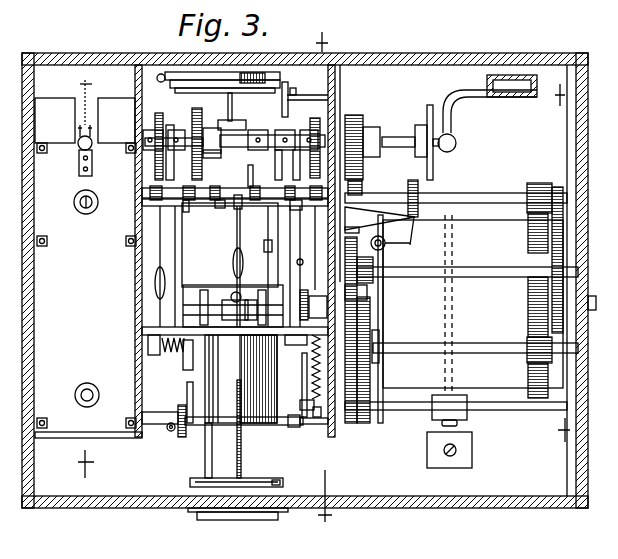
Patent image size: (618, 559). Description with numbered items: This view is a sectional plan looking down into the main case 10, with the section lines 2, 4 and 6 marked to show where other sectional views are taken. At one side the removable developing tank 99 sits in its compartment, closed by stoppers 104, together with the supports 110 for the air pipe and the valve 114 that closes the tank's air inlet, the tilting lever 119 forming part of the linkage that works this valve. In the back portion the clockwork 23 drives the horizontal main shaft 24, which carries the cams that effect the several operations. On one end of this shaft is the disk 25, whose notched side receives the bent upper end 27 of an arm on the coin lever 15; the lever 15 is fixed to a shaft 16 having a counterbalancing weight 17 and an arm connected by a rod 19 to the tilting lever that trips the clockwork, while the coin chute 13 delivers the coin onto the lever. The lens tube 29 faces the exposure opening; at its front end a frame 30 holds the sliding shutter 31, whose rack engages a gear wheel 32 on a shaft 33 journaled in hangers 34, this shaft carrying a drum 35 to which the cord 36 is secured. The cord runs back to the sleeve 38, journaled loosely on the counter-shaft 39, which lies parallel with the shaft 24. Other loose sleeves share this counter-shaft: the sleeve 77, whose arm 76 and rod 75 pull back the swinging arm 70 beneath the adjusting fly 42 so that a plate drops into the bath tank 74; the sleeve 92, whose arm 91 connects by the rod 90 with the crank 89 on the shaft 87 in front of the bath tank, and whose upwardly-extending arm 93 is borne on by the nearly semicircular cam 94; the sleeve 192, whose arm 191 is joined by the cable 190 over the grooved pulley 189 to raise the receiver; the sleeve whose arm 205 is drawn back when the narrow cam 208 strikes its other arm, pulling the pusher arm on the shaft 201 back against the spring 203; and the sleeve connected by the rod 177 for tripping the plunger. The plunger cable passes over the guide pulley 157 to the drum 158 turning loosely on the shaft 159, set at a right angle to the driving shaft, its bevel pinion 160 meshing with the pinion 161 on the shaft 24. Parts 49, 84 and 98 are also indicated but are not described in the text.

The main case 10 is at (512, 509).
The section line 2— 2 is at (327, 280).
The section line 4— 4 is at (559, 271).
The section line 6 is at (81, 275).
The coin chute 13 is at (515, 75).
The lever 15 is at (453, 118).
The shaft 16 is at (510, 410).
The counterbalancing weight 17 is at (470, 457).
The rod 19 is at (314, 124).
The clock-work 23 is at (473, 320).
The main shaft 24 is at (232, 147).
The disk 25 is at (433, 120).
The bent upper end 27 is at (456, 150).
The lens tube 29 is at (241, 379).
The frame 30 is at (278, 481).
The shutter 31 is at (190, 484).
The gear wheel 32 is at (235, 448).
The shaft 33 is at (212, 432).
The hangers 34 is at (195, 410).
The drum 35 is at (180, 435).
The cord or cable 36 is at (188, 263).
The sleeve 38 is at (188, 208).
The counter-shaft 39 is at (253, 167).
The adjusting fly 42 is at (248, 290).
The block 49 is at (211, 128).
The swinging arm 70 is at (230, 292).
The developing bath tank 74 is at (255, 300).
The rod 75 is at (250, 240).
The arm 76 is at (243, 205).
The sleeve 77 is at (221, 208).
The pivot 84 is at (236, 290).
The shaft 87 is at (305, 355).
The crank 89 is at (153, 356).
The rod 90 is at (181, 250).
The arm 91 is at (163, 208).
The sleeve 92 is at (160, 262).
The upwardly-extending arm 93 is at (158, 176).
The cam 94 is at (140, 160).
The spring 98 is at (175, 356).
The removable tank 99 is at (88, 268).
The stoppers 104 is at (96, 390).
The supports 110 is at (80, 160).
The valve 114 is at (91, 208).
The tilting lever 119 is at (268, 208).
The guide pulley 157 is at (287, 133).
The drum 158 is at (263, 82).
The shaft 159 is at (233, 110).
The bevel pinion 160 is at (246, 125).
The pinion 161 is at (208, 158).
The rod 177 is at (268, 247).
The grooved pulley 189 is at (314, 299).
The cable 190 is at (317, 248).
The arm 191 is at (299, 210).
The sleeve 192 is at (309, 152).
The shaft 201 is at (300, 428).
The spring 203 is at (305, 407).
The arm 205 is at (291, 250).
The cam 208 is at (300, 262).